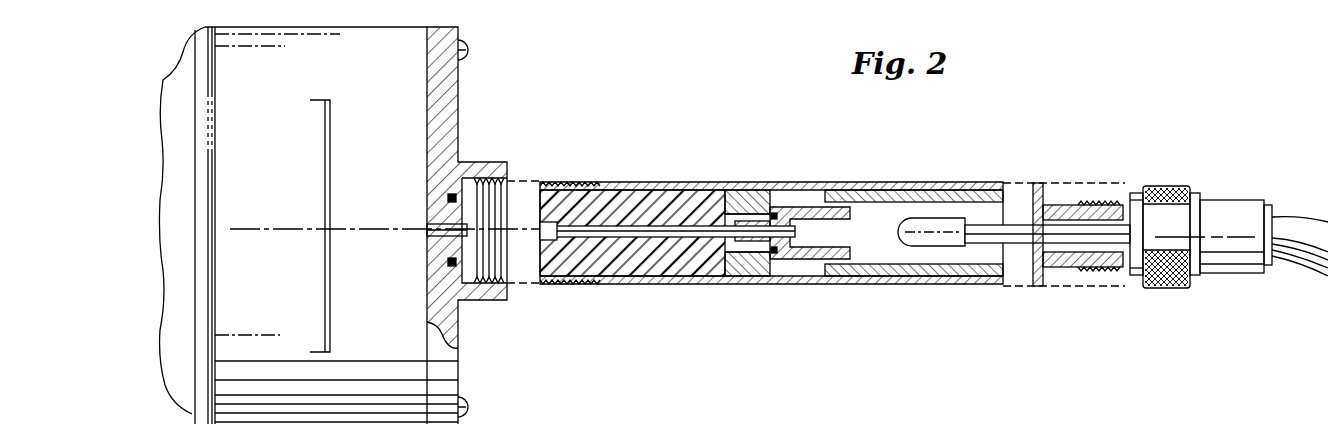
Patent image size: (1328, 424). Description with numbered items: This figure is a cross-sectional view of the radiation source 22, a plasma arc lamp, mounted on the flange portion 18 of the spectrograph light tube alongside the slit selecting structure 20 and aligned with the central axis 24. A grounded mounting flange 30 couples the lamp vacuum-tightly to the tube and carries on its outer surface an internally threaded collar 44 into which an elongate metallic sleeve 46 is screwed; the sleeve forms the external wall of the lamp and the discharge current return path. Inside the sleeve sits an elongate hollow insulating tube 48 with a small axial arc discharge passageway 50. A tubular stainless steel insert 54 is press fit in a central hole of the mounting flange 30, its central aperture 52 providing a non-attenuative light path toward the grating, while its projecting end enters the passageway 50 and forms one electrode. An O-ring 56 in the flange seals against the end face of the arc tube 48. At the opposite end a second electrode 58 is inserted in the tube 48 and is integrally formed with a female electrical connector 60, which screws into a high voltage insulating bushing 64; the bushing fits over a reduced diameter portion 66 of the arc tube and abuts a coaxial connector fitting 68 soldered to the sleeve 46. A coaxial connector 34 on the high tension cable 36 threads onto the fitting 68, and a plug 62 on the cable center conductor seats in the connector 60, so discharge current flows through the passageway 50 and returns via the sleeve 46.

The flange portion 18 is at (186, 55).
The slit selecting structure 20 is at (340, 77).
The radiation source 22 is at (884, 151).
The central axis 24 is at (275, 218).
The mounting flange 30 is at (458, 100).
The coaxial connector 34 is at (1165, 186).
The high tension cable 36 is at (1312, 222).
The internally threaded collar 44 is at (500, 300).
The metallic sleeve 46 is at (815, 183).
The insulating tube 48 is at (582, 200).
The arc discharge passageway 50 is at (652, 226).
The central aperture 52 is at (427, 226).
The tubular stainless steel insert 54 is at (458, 210).
The O-ring 56 is at (458, 270).
The second electrode 58 is at (760, 212).
The female electrical connector 60 is at (850, 247).
The plug 62 is at (932, 222).
The high voltage insulating bushing 64 is at (930, 276).
The reduced diameter portion 66 is at (735, 220).
The coaxial connector fitting 68 is at (1065, 205).